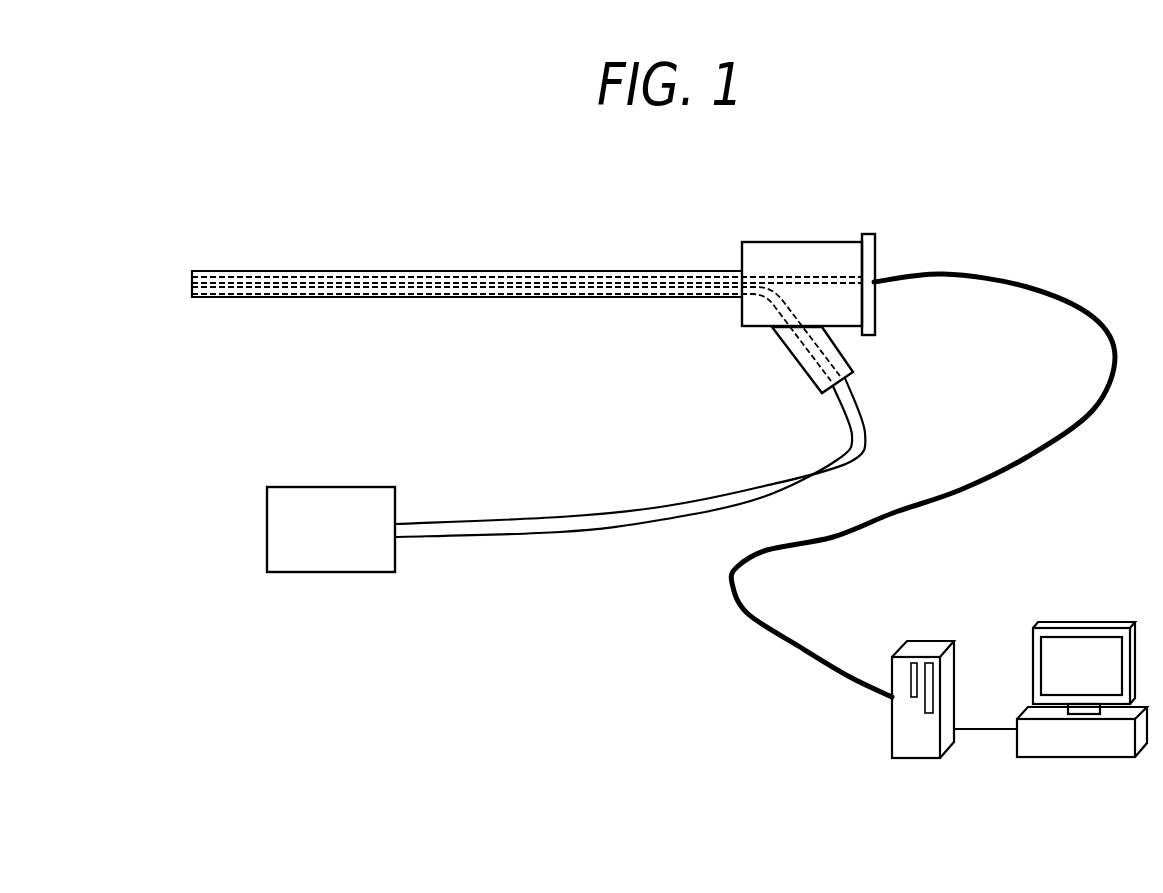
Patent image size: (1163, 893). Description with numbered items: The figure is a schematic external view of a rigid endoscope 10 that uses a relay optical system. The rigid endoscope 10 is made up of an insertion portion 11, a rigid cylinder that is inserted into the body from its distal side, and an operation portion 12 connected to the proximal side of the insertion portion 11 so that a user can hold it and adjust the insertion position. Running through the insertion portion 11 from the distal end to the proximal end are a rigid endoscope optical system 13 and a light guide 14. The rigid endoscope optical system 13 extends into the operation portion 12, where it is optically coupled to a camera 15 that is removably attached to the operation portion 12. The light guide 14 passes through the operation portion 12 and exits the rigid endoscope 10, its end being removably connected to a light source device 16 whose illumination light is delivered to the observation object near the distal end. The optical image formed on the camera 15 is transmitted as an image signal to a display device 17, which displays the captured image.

The rigid endoscope 10 is at (917, 429).
The insertion portion 11 is at (451, 270).
The operation portion 12 is at (835, 241).
The rigid endoscope optical system 13 is at (830, 277).
The light guide 14 is at (800, 345).
The camera 15 is at (876, 320).
The light source device 16 is at (328, 573).
The display device 17 is at (983, 623).